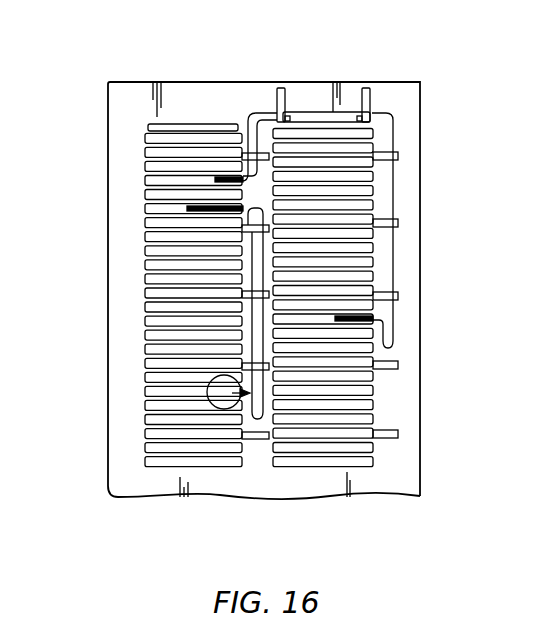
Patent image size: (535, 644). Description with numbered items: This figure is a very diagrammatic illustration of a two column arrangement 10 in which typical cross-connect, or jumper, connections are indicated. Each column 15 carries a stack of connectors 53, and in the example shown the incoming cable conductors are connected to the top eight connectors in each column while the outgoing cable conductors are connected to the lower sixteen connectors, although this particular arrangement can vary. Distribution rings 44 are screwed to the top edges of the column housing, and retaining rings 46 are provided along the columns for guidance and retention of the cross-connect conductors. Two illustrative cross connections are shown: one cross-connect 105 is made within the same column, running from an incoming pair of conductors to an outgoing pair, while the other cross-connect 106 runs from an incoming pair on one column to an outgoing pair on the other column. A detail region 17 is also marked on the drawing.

The battery housing 10 is at (116, 82).
The column 15 is at (206, 257).
The detail circle 17 is at (223, 392).
The distribution rings 44 is at (281, 88).
The retaining rings 46 is at (257, 152).
The connector 53 is at (143, 152).
The cross-connect 105 is at (258, 333).
The cross-connect 106 is at (395, 191).